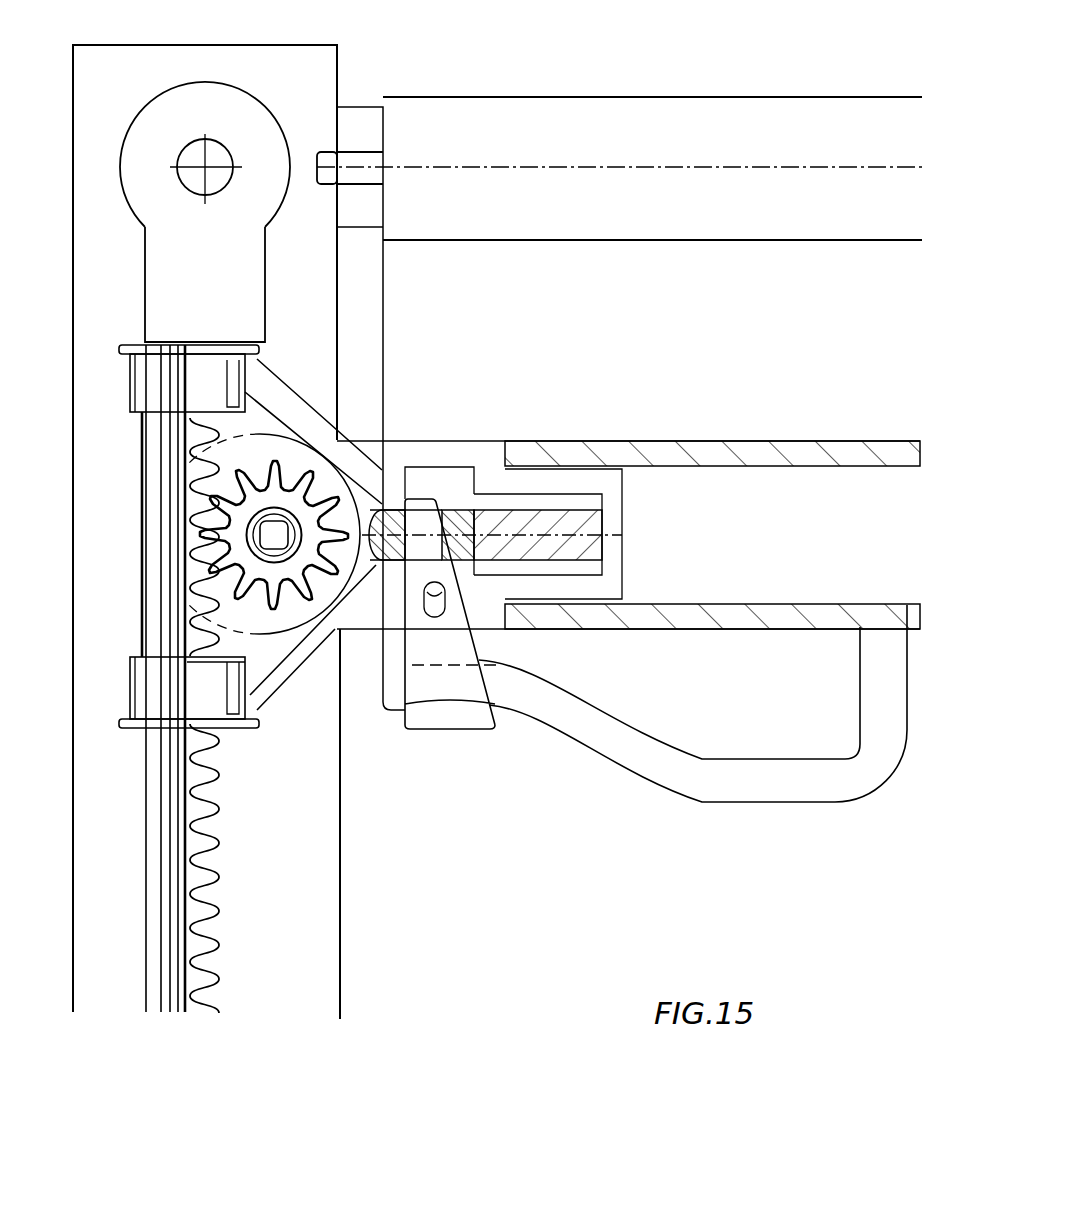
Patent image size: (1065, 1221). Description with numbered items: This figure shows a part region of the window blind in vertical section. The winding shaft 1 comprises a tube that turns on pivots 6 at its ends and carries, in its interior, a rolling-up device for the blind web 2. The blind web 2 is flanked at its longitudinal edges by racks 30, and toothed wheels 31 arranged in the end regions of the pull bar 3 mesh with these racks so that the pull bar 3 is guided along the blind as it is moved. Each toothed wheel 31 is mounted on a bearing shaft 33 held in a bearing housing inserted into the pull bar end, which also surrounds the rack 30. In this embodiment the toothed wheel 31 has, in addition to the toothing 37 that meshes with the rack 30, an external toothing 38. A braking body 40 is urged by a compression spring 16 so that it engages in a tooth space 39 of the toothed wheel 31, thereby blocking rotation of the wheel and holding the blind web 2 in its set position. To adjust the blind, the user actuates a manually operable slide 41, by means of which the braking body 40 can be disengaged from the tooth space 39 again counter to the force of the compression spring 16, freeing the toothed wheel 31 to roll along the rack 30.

The winding shaft 1 is at (758, 95).
The blind web 2 is at (608, 253).
The pull bar 3 is at (858, 441).
The pivot 6 is at (340, 150).
The compression spring 16 is at (557, 517).
The rack 30 is at (207, 888).
The toothed wheel 31 is at (335, 468).
The bearing shaft 33 is at (178, 563).
The toothing 37 is at (330, 490).
The external toothing 38 is at (307, 428).
The tooth space 39 is at (347, 677).
The braking body 40 is at (457, 507).
The manually operable slide 41 is at (435, 717).